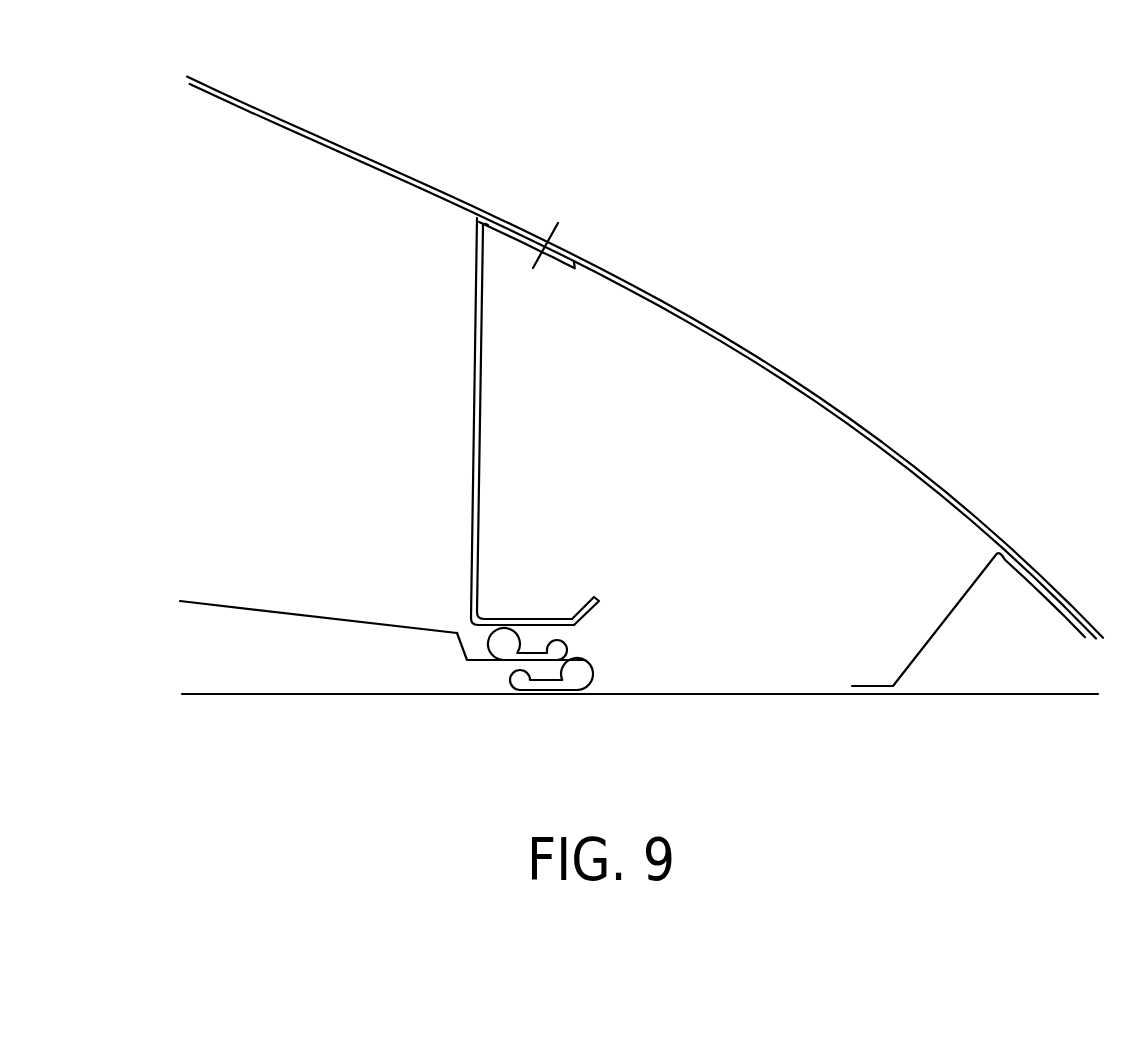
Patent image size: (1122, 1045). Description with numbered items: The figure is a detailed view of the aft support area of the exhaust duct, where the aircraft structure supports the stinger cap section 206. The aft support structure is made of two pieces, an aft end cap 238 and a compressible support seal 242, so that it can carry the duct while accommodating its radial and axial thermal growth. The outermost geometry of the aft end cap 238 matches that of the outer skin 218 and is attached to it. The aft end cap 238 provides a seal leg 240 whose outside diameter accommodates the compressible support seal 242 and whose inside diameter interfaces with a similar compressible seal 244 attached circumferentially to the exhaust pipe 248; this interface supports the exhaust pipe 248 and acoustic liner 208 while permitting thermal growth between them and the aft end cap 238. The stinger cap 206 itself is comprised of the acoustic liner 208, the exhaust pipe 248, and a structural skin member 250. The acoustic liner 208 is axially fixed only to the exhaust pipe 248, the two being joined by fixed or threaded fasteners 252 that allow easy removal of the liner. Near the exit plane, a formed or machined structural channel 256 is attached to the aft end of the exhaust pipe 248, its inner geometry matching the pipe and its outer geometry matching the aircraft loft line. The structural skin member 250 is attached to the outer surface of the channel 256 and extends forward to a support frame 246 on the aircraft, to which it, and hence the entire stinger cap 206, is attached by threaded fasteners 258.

The stinger cap section 206 is at (645, 358).
The acoustic liner 208 is at (275, 694).
The outer skin 218 is at (202, 602).
The aft end cap 238 is at (458, 622).
The seal leg 240 is at (612, 655).
The compressible support seal 242 is at (610, 652).
The compressible seal 244 is at (593, 683).
The support frame 246 is at (481, 442).
The exhaust pipe 248 is at (772, 694).
The structural skin member 250 is at (702, 325).
The fasteners 252 is at (395, 694).
The structural channel 256 is at (947, 627).
The threaded fasteners 258 is at (557, 223).